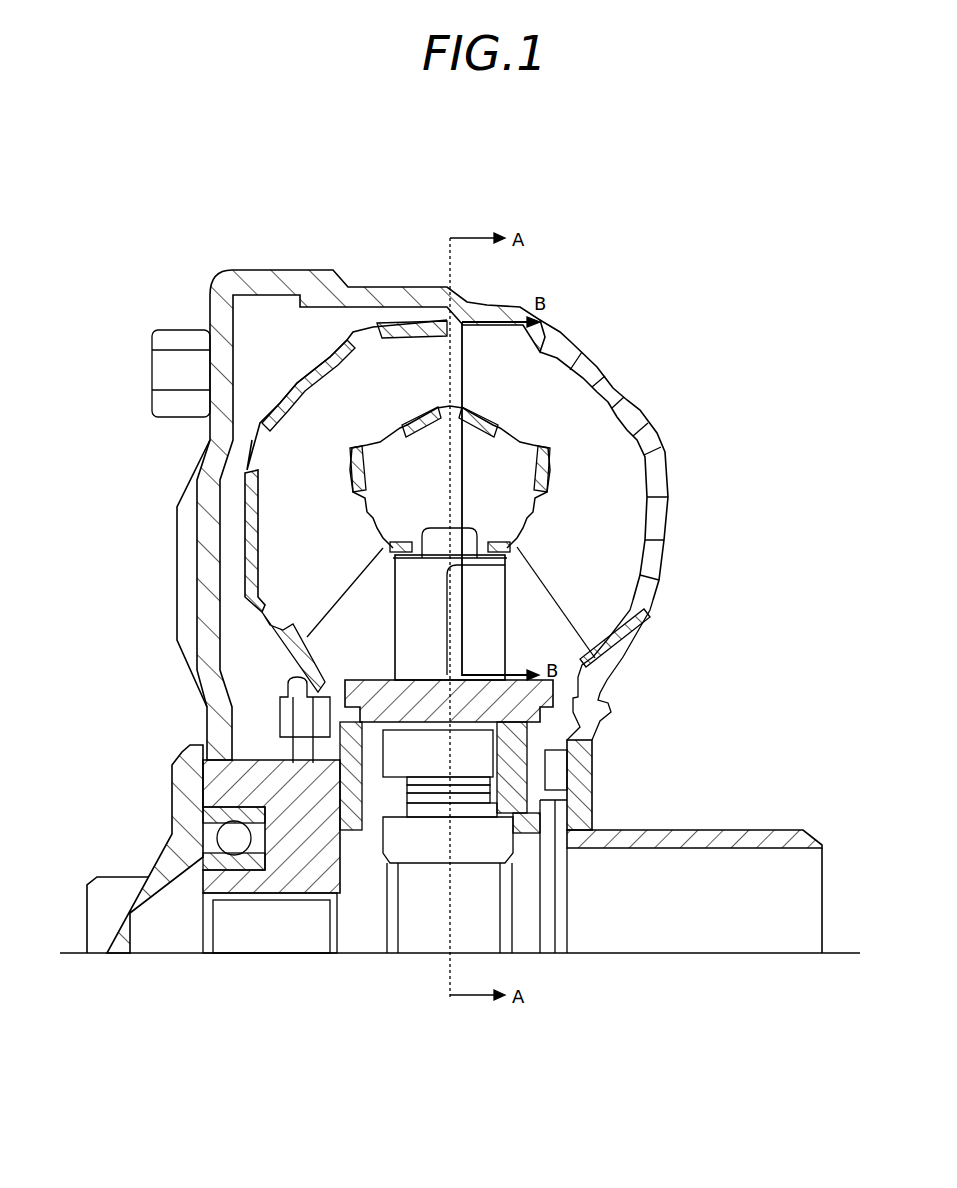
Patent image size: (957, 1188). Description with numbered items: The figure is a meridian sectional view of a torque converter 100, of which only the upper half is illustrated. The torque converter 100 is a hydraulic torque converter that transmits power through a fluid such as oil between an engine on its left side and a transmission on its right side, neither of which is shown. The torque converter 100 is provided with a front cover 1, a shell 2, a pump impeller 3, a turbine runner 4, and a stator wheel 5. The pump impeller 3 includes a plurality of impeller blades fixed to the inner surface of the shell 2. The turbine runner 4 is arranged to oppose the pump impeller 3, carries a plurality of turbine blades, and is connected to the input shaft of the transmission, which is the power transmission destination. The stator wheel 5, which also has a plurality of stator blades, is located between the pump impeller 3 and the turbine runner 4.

The front cover 1 is at (286, 276).
The shell 2 is at (613, 398).
The pump impeller 3 is at (617, 483).
The turbine runner 4 is at (283, 555).
The stator wheel 5 is at (480, 640).
The torque converter 100 is at (692, 248).